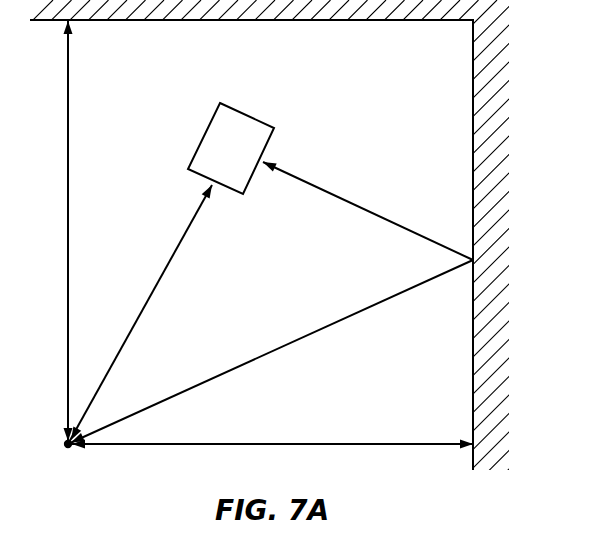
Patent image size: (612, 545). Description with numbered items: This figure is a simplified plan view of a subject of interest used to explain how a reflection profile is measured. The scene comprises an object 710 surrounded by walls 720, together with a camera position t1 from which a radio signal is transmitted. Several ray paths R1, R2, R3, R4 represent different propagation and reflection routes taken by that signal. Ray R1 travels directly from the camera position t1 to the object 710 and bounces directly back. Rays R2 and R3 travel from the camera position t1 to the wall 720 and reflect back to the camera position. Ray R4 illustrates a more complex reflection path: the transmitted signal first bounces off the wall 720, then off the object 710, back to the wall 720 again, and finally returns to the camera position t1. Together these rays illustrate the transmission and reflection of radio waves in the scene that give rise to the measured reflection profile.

The object 710 is at (260, 118).
The surrounding walls 720 is at (228, 21).
The ray path R1 is at (140, 314).
The ray path R2 is at (83, 232).
The ray path R3 is at (270, 434).
The ray path R4 is at (270, 303).
The camera position t1 is at (66, 466).